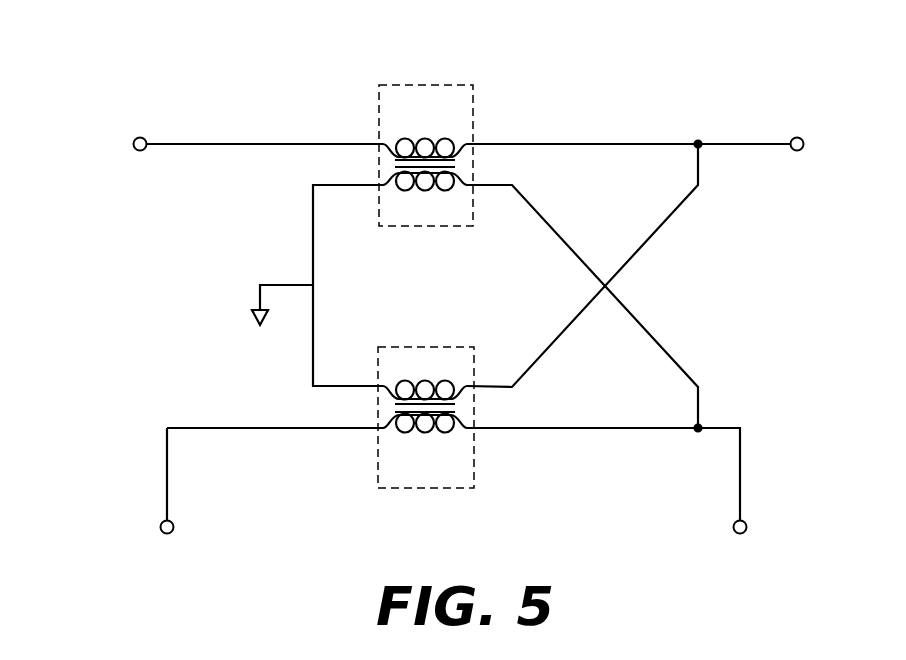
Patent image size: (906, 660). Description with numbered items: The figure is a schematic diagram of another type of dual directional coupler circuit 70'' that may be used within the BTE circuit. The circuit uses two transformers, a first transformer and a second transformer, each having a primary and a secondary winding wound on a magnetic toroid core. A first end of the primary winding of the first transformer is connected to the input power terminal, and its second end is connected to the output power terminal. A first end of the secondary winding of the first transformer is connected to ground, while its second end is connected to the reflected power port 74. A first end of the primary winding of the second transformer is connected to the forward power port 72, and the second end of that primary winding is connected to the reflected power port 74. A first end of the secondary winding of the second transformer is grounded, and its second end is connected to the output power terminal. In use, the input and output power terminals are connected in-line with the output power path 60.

The dual directional coupler circuit 70'' is at (445, 292).
The output power path 60 is at (250, 143).
The forward power port 72 is at (160, 525).
The reflected power port 74 is at (747, 527).